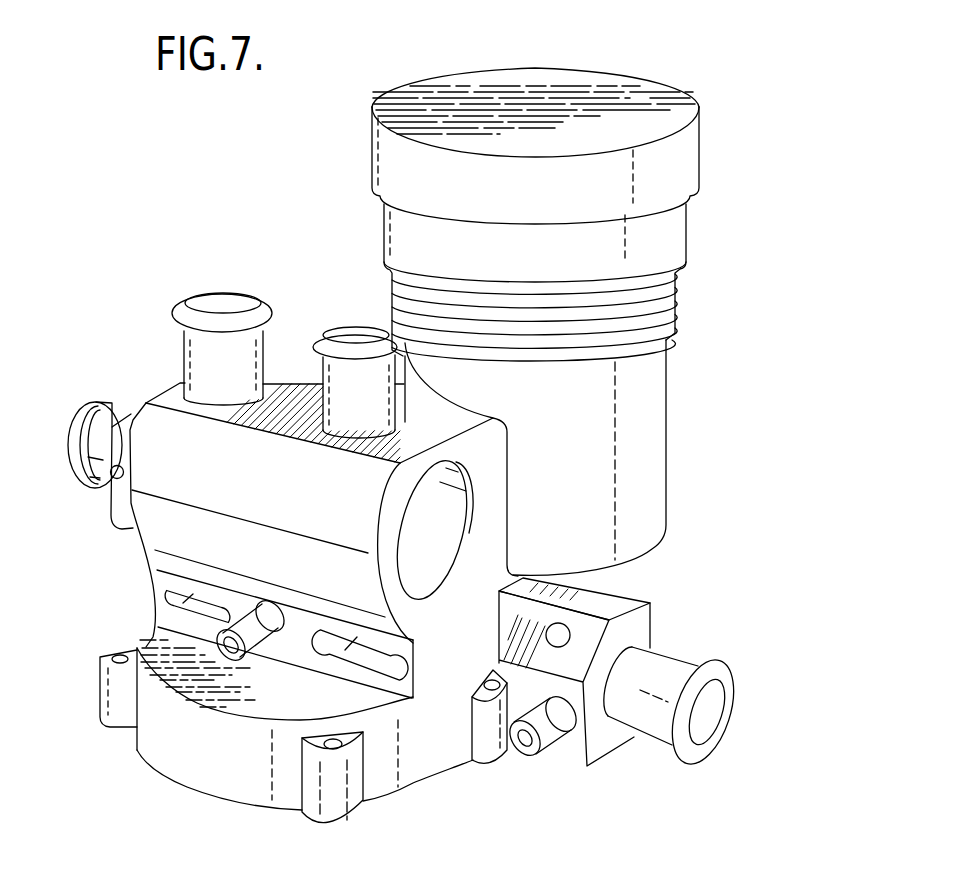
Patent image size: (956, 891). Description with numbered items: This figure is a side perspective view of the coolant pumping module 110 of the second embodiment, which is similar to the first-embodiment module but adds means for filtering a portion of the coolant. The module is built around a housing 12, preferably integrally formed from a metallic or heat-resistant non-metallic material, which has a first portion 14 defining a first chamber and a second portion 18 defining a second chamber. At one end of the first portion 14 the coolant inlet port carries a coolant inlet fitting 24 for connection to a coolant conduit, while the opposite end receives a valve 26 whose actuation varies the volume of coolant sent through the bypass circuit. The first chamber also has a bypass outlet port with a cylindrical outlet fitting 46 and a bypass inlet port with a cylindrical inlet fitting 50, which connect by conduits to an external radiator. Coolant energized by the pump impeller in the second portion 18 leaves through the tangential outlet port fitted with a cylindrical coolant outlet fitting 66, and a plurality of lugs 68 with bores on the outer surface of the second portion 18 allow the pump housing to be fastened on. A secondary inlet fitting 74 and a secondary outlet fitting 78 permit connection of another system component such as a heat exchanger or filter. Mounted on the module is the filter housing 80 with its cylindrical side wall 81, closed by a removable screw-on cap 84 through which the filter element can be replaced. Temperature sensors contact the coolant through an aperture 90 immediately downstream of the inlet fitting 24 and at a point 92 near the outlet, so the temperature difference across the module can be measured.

The housing 12 is at (155, 581).
The first portion 14 is at (156, 400).
The second portion 18 is at (173, 743).
The coolant inlet fitting 24 is at (93, 402).
The valve 26 is at (440, 503).
The cylindrical outlet fitting 46 is at (183, 312).
The cylindrical inlet fitting 50 is at (316, 337).
The cylindrical coolant outlet fitting 66 is at (688, 660).
The lugs 68 is at (101, 713).
The cylindrical inlet fitting 74 is at (268, 655).
The cylindrical outlet fitting 78 is at (562, 750).
The filter housing 80 is at (672, 361).
The cylindrical side wall 81 is at (686, 402).
The removable screw-on cap 84 is at (700, 152).
The aperture 90 is at (110, 486).
The point 92 is at (562, 628).
The coolant pumping module 110 is at (699, 526).